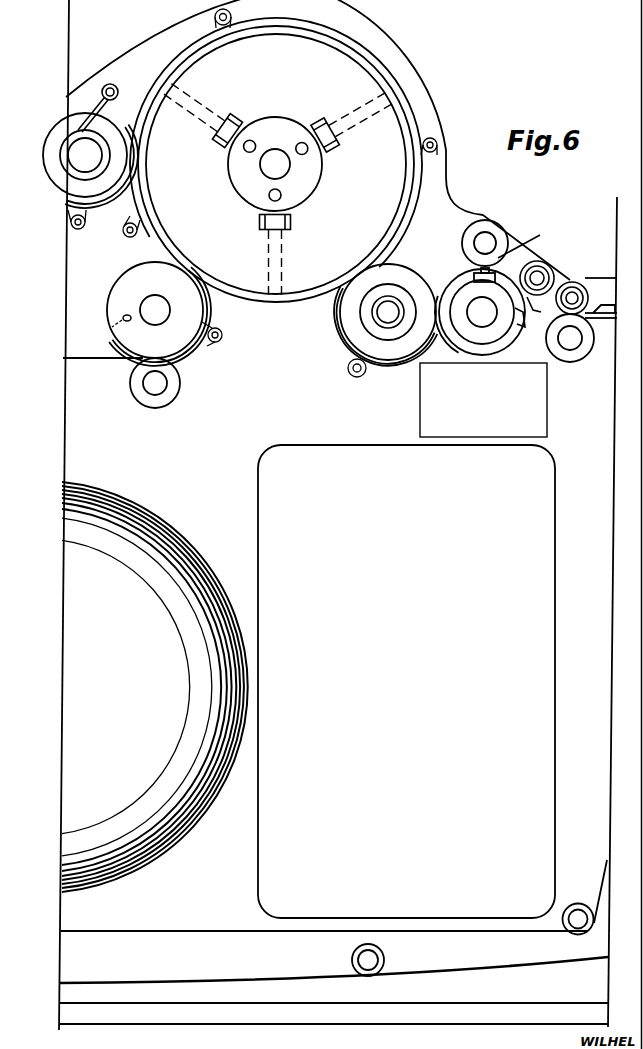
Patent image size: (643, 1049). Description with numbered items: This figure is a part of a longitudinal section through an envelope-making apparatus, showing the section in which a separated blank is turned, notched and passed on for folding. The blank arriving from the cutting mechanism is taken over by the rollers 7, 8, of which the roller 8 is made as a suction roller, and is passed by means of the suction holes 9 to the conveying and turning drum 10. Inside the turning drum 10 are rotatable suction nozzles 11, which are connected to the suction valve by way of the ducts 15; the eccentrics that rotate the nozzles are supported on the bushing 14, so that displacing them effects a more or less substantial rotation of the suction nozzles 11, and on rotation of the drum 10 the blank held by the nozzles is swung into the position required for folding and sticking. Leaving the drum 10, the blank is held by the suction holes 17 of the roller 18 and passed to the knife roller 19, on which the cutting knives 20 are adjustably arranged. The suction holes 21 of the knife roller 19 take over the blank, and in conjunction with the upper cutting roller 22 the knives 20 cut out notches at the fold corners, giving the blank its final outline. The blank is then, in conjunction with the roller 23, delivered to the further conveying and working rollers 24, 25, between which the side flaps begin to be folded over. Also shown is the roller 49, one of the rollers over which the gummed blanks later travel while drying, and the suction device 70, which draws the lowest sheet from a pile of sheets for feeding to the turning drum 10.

The roller 7 is at (120, 286).
The suction roller 8 is at (153, 398).
The suction holes 9 is at (110, 325).
The conveying and turning drum 10 is at (293, 295).
The rotatable suction nozzles 11 is at (187, 115).
The bushing 14 is at (105, 122).
The ducts 15 is at (243, 150).
The suction holes 17 is at (370, 335).
The roller 18 is at (393, 353).
The knife roller 19 is at (452, 285).
The cutting knives 20 is at (525, 340).
The suction holes 21 is at (494, 326).
The upper cutting roller 22 is at (488, 232).
The roller 23 is at (553, 268).
The conveying and working roller 24 is at (576, 282).
The conveying and working roller 25 is at (571, 362).
The roller 49 is at (383, 957).
The suction device 70 is at (79, 130).